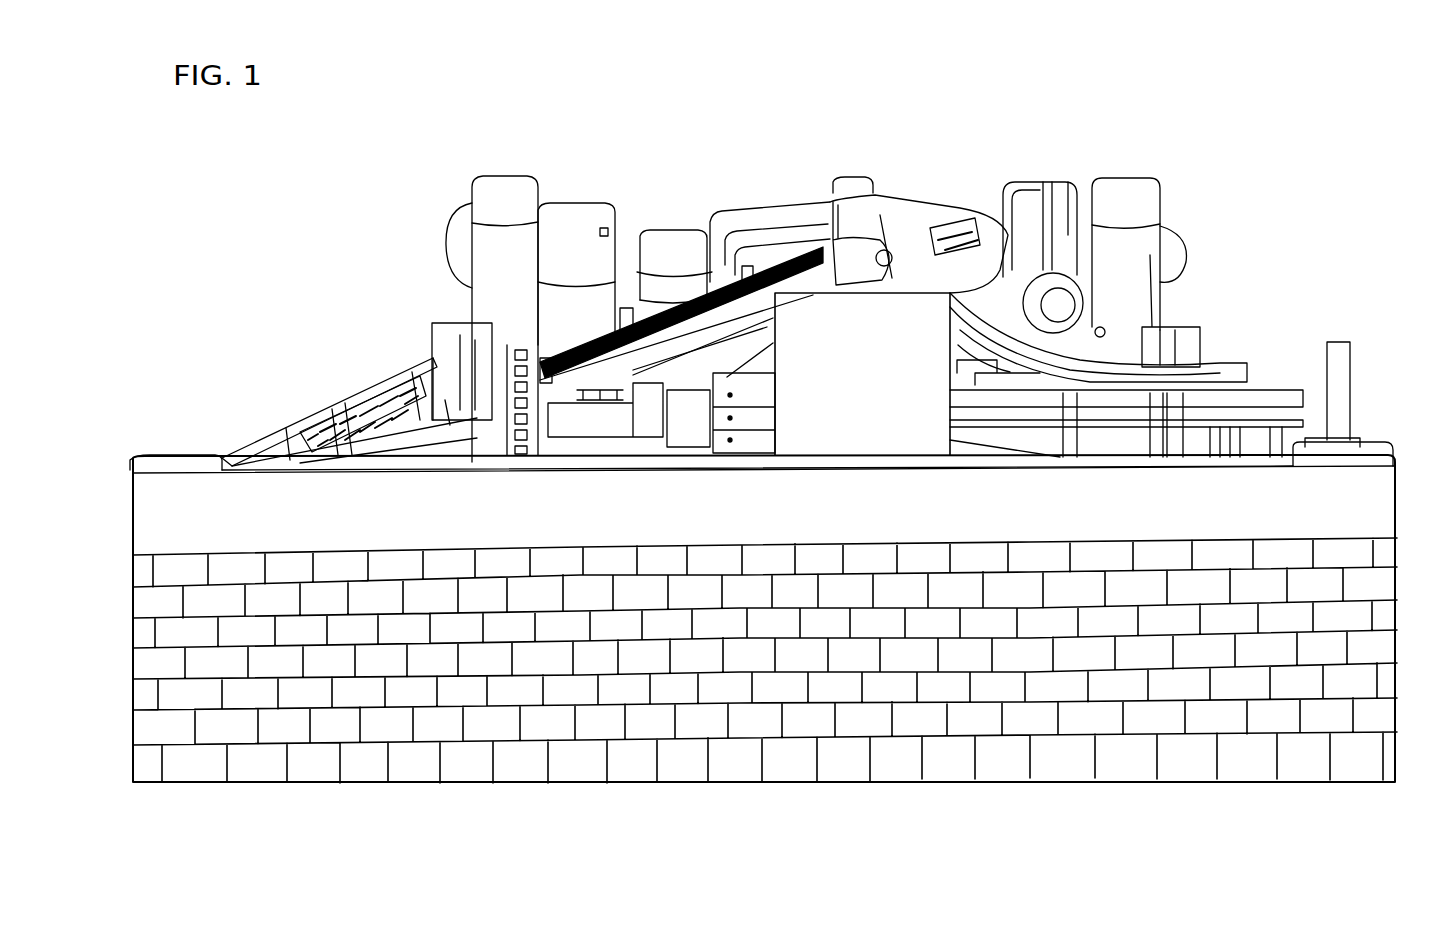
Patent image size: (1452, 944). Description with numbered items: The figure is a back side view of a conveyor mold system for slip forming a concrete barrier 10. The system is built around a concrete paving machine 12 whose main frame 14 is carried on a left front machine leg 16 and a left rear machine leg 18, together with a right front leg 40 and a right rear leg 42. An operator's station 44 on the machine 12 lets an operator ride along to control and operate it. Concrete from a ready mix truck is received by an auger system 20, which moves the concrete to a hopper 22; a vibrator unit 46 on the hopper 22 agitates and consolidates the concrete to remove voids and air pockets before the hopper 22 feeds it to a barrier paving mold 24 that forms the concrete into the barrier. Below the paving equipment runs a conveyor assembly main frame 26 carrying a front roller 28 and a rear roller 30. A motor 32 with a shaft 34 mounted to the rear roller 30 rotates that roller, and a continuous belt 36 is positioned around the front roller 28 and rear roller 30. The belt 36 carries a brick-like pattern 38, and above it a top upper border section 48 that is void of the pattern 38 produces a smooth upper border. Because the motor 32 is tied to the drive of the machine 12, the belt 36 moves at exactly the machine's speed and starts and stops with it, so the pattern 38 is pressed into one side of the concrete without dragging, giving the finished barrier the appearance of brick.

The conveyor mold system for slip forming a concrete barrier 10 is at (658, 160).
The concrete paving machine 12 is at (967, 212).
The main frame 14 is at (820, 287).
The left front machine leg 16 is at (500, 195).
The left rear machine leg 18 is at (1125, 190).
The auger system 20 is at (390, 410).
The hopper 22 is at (855, 420).
The barrier paving mold 24 is at (752, 420).
The conveyor assembly main frame 26 is at (615, 468).
The front roller 28 is at (185, 468).
The rear roller 30 is at (1375, 452).
The motor 32 is at (1320, 438).
The shaft 34 is at (1338, 348).
The belt 36 is at (768, 637).
The pattern 38 is at (540, 723).
The right front leg 40 is at (680, 245).
The right rear leg 42 is at (987, 215).
The operator's station 44 is at (960, 232).
The vibrator unit 46 is at (888, 290).
The top upper border section 48 is at (148, 518).